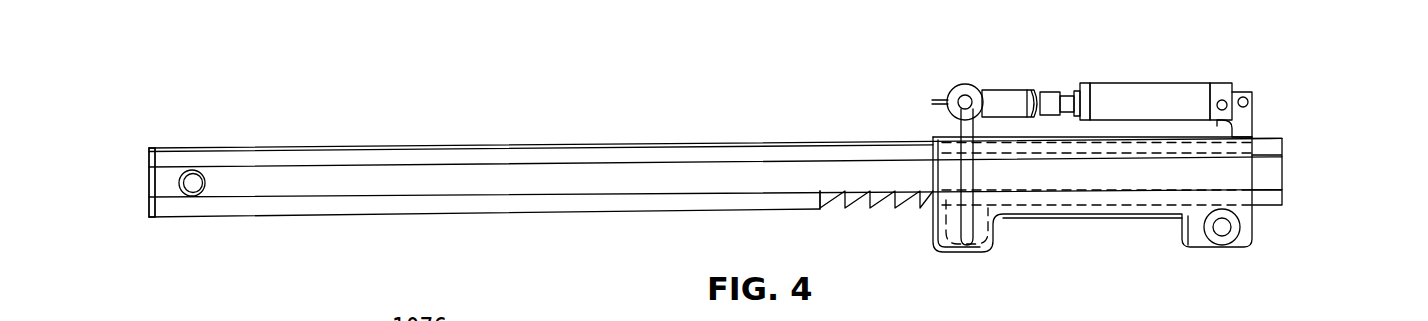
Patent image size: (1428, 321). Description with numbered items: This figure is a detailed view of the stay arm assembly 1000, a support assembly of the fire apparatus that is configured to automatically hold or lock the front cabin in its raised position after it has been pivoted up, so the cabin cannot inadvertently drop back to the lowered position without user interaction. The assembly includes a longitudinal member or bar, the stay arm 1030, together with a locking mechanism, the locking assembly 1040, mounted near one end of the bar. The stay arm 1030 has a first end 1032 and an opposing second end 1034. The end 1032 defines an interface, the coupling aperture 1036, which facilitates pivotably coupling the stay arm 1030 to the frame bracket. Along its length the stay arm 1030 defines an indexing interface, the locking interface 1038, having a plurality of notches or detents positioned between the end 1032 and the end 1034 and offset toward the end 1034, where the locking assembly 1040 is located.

The stay arm assembly 1000 is at (266, 64).
The stay arm 1030 is at (360, 180).
The end 1032 is at (128, 174).
The end 1034 is at (1308, 160).
The coupling aperture 1036 is at (192, 170).
The locking interface 1038 is at (888, 218).
The locking assembly 1040 is at (1190, 59).